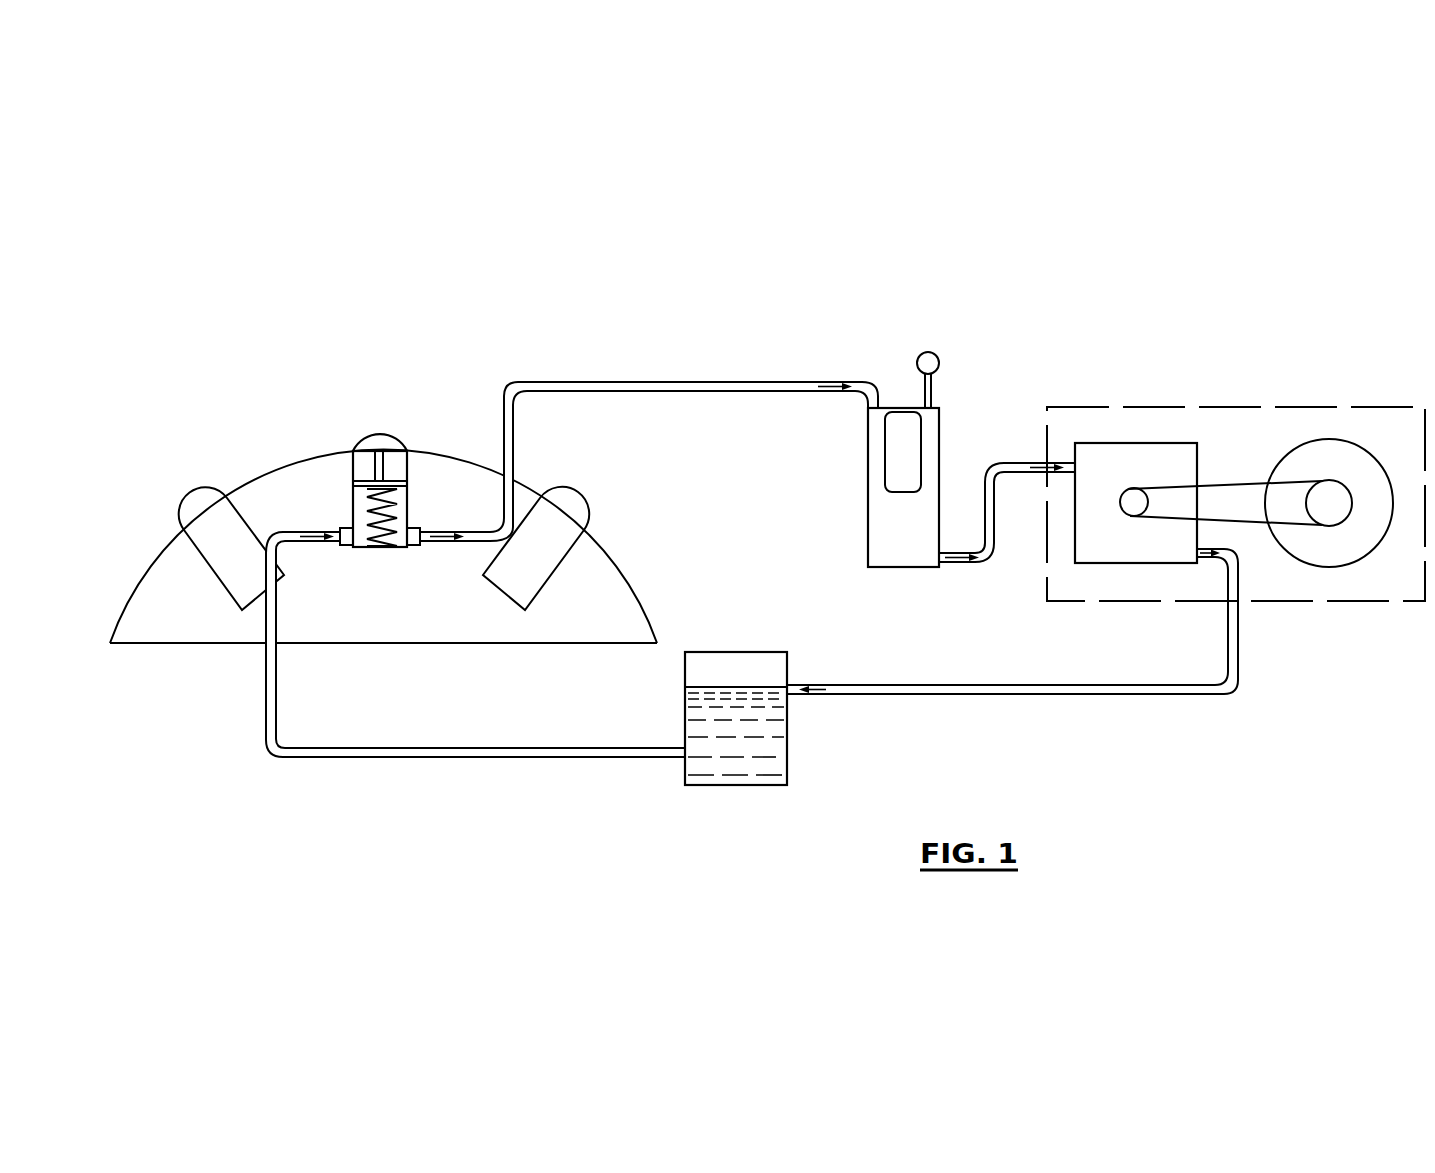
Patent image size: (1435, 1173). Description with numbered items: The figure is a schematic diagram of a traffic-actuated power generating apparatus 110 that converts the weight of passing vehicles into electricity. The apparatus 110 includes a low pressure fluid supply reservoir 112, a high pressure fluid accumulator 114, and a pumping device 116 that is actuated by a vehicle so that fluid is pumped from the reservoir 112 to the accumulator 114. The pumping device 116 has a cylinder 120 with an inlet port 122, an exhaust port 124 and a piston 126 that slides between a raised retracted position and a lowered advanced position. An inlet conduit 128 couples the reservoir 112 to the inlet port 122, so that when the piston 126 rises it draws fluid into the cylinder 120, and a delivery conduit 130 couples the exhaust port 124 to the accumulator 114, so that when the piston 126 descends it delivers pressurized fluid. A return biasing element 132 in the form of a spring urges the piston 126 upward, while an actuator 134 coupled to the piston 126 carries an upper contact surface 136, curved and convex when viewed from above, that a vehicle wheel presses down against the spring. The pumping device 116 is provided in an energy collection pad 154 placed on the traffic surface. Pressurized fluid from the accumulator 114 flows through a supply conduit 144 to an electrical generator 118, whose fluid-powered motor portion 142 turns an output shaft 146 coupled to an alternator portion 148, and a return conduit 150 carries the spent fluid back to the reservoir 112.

The traffic-actuated power generating apparatus 110 is at (1332, 252).
The low pressure fluid supply reservoir 112 is at (788, 665).
The high pressure fluid accumulator 114 is at (940, 423).
The pumping device 116 is at (396, 469).
The electrical generator 118 is at (1236, 485).
The cylinder 120 is at (408, 473).
The inlet port 122 is at (346, 545).
The exhaust port 124 is at (410, 545).
The piston 126 is at (399, 485).
The inlet conduit 128 is at (483, 748).
The delivery conduit 130 is at (586, 381).
The return biasing element 132 is at (380, 548).
The actuator 134 is at (388, 467).
The upper contact surface 136 is at (385, 433).
The fluid-powered motor portion 142 is at (1140, 442).
The supply conduit 144 is at (975, 563).
The output shaft 146 is at (1130, 516).
The alternator portion 148 is at (1325, 568).
The return conduit 150 is at (983, 694).
The energy collection pad 154 is at (146, 560).